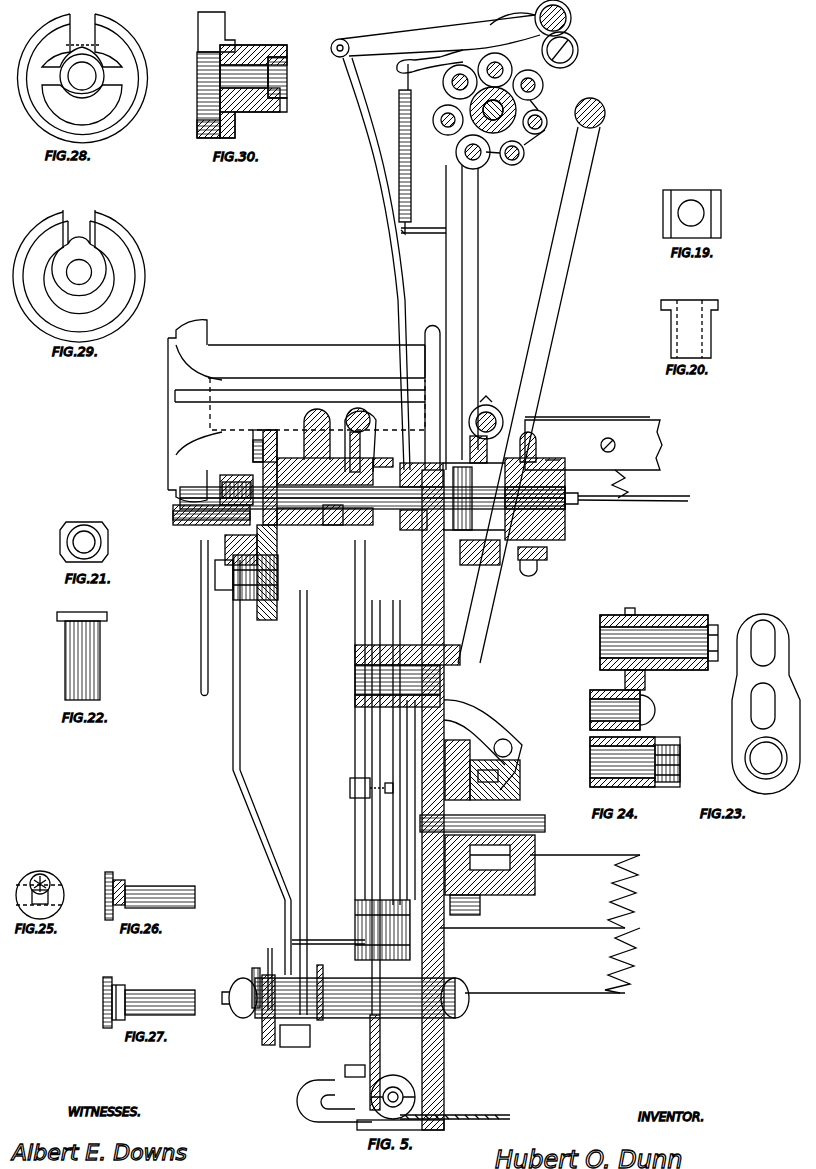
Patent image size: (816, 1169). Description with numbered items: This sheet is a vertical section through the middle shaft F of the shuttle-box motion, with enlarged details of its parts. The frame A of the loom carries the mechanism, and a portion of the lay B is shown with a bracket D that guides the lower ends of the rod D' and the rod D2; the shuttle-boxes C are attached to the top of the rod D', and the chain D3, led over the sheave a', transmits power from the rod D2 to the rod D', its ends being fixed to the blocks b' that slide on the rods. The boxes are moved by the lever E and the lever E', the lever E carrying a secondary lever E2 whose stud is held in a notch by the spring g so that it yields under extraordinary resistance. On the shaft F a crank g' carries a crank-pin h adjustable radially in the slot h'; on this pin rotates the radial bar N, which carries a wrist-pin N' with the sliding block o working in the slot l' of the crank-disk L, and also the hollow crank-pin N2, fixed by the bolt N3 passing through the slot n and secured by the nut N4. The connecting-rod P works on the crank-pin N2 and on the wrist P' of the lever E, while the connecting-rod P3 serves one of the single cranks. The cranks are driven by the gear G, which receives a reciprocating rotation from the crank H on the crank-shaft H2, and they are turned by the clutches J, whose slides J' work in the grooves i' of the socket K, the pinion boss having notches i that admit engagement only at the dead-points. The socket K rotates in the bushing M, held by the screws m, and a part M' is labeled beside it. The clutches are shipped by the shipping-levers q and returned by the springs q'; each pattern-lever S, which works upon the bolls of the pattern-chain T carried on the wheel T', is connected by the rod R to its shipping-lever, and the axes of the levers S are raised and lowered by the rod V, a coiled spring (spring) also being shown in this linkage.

In FIG. 5, the pattern-lever S is at (454, 36).
In FIG. 5, the pattern-chain T is at (493, 111).
In FIG. 5, the pattern-chain wheel T' is at (516, 132).
In FIG. 5, the rod V is at (531, 380).
In FIG. 5, the rod or chain R is at (410, 264).
In FIG. 5, the shuttle-box C is at (304, 411).
In FIG. 28, the crank-disk L is at (83, 78).
In FIG. 29, the crank-disk L is at (79, 276).
In FIG. 30, the crank-disk L is at (216, 75).
In FIG. 5, the crank-disk L is at (265, 470).
In FIG. 30, the socket K is at (253, 80).
In FIG. 5, the bushing M is at (308, 434).
In FIG. 5, the clutch J is at (360, 440).
In FIG. 5, the clutch slide J' is at (482, 499).
In FIG. 5, the shipping-lever q is at (325, 539).
In FIG. 5, the spring q' is at (486, 429).
In FIG. 26, the middle shaft F is at (160, 897).
In FIG. 27, the middle shaft F is at (160, 994).
In FIG. 5, the middle shaft F is at (379, 498).
In FIG. 5, the lay B is at (593, 443).
In FIG. 5, the plate M' is at (560, 458).
In FIG. 5, the screw m is at (544, 504).
In FIG. 5, the chain D3 is at (545, 794).
In FIG. 5, the frame A is at (400, 800).
In FIG. 5, the gear G is at (427, 623).
In FIG. 5, the rod D2 is at (369, 777).
In FIG. 5, the block b' is at (373, 789).
In FIG. 5, the crank H is at (393, 752).
In FIG. 5, the crank-shaft H2 is at (491, 865).
In FIG. 23, the radial bar N is at (766, 693).
In FIG. 24, the radial bar N is at (657, 685).
In FIG. 5, the radial bar N is at (208, 515).
In FIG. 24, the wrist-pin N' is at (659, 652).
In FIG. 21, the hollow crank-pin N2 is at (94, 542).
In FIG. 22, the hollow crank-pin N2 is at (87, 656).
In FIG. 24, the hollow crank-pin N2 is at (646, 720).
In FIG. 5, the hollow crank-pin N2 is at (225, 567).
In FIG. 24, the bolt N3 is at (640, 702).
In FIG. 5, the bolt N3 is at (182, 514).
In FIG. 5, the nut N4 is at (535, 695).
In FIG. 23, the slot n is at (762, 708).
In FIG. 19, the sliding block o is at (692, 214).
In FIG. 20, the sliding block o is at (689, 329).
In FIG. 24, the sliding block o is at (662, 610).
In FIG. 24, the crank-pin h is at (635, 762).
In FIG. 25, the crank-pin h is at (47, 891).
In FIG. 25, the slot h' is at (40, 874).
In FIG. 27, the slot h' is at (121, 986).
In FIG. 25, the spring g is at (40, 895).
In FIG. 26, the crank g' is at (108, 896).
In FIG. 27, the crank g' is at (107, 1002).
In FIG. 5, the connecting-rod P is at (198, 617).
In FIG. 5, the wrist P' is at (540, 903).
In FIG. 5, the connecting-rod P3 is at (262, 767).
In FIG. 5, the bracket D is at (345, 1005).
In FIG. 5, the rod D' is at (312, 802).
In FIG. 5, the shuttle-box lever E is at (286, 991).
In FIG. 5, the lever E' is at (324, 992).
In FIG. 5, the secondary lever E2 is at (253, 988).
In FIG. 5, the sheave a' is at (356, 1093).
In FIG. 28, the beveled notch i is at (82, 85).
In FIG. 28, the groove i' is at (82, 30).
In FIG. 29, the slot l' is at (77, 224).
In FIG. 5, the element spring is at (405, 149).